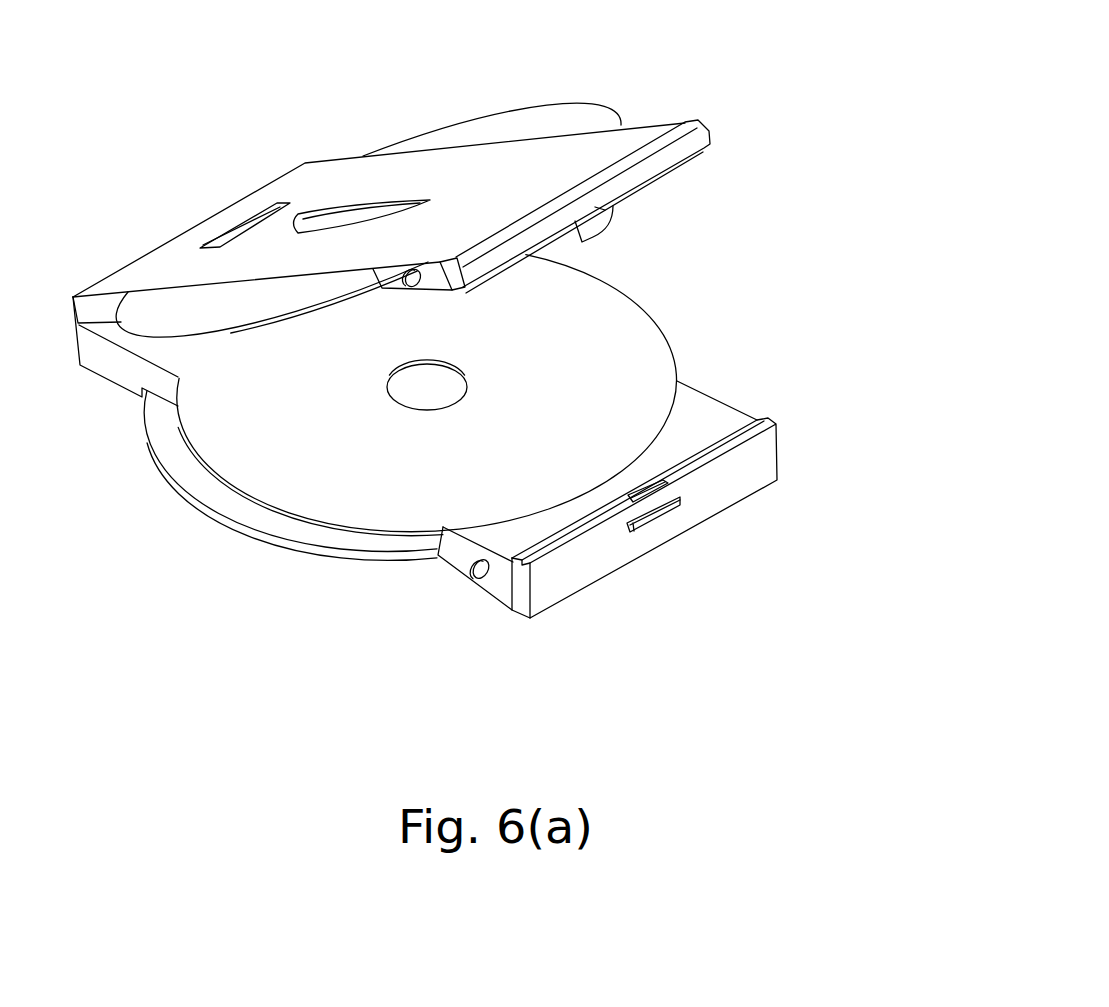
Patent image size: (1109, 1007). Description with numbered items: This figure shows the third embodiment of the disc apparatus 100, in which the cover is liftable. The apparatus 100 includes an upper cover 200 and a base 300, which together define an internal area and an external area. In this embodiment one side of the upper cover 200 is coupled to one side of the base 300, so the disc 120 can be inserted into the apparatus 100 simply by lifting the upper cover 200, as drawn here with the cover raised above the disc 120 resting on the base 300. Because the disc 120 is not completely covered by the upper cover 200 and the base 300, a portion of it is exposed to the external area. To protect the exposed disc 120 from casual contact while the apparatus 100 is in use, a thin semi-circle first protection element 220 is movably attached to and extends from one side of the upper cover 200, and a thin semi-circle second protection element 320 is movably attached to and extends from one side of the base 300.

The apparatus 100 is at (733, 483).
The disc 120 is at (607, 320).
The upper cover 200 is at (572, 145).
The first protection element 220 is at (162, 307).
The base 300 is at (493, 583).
The second protection element 320 is at (282, 528).